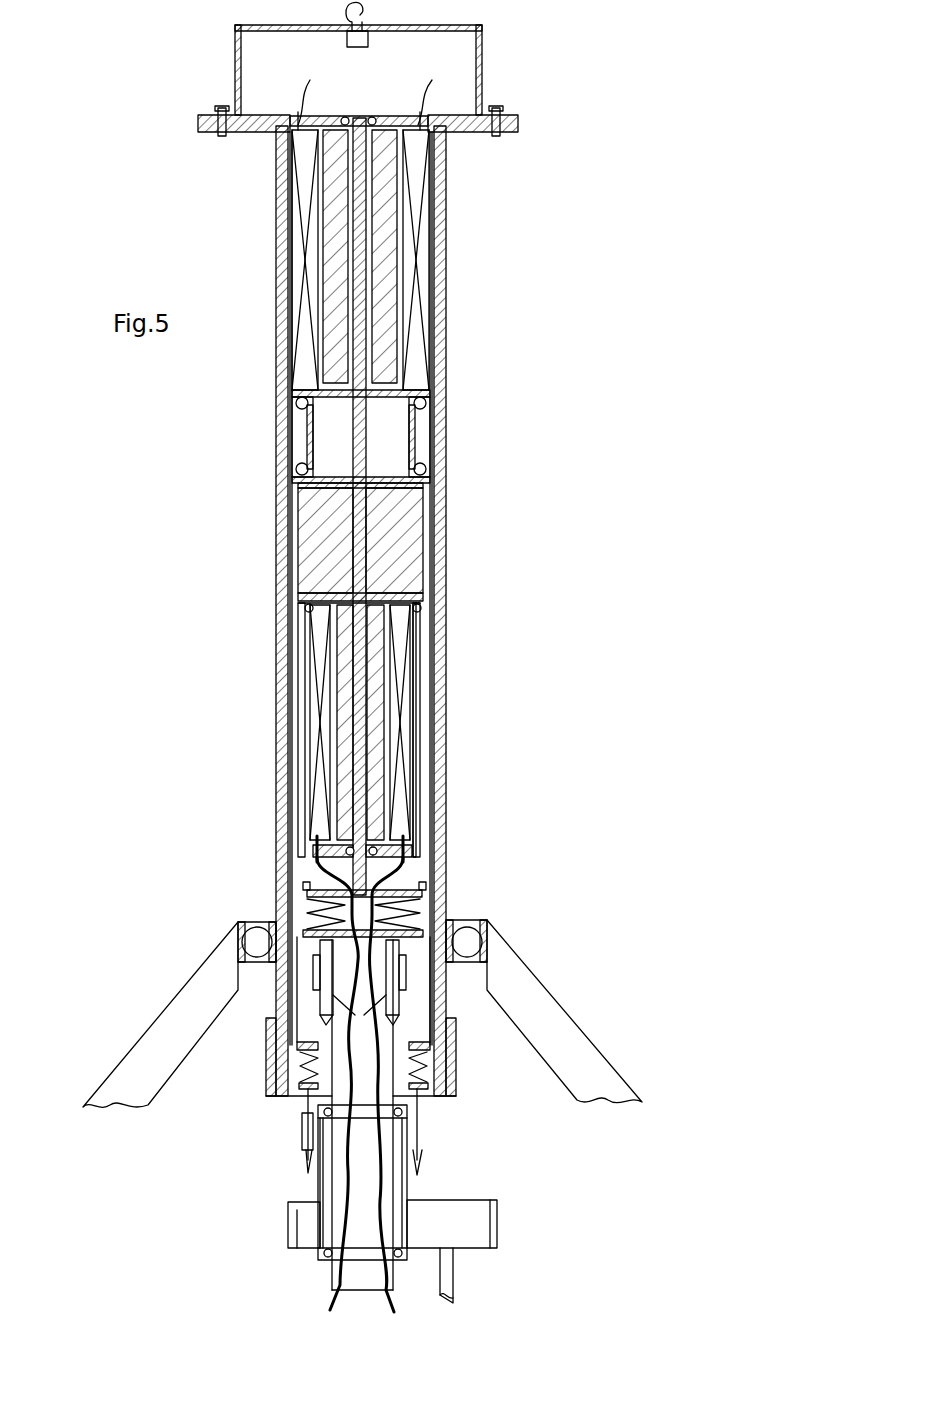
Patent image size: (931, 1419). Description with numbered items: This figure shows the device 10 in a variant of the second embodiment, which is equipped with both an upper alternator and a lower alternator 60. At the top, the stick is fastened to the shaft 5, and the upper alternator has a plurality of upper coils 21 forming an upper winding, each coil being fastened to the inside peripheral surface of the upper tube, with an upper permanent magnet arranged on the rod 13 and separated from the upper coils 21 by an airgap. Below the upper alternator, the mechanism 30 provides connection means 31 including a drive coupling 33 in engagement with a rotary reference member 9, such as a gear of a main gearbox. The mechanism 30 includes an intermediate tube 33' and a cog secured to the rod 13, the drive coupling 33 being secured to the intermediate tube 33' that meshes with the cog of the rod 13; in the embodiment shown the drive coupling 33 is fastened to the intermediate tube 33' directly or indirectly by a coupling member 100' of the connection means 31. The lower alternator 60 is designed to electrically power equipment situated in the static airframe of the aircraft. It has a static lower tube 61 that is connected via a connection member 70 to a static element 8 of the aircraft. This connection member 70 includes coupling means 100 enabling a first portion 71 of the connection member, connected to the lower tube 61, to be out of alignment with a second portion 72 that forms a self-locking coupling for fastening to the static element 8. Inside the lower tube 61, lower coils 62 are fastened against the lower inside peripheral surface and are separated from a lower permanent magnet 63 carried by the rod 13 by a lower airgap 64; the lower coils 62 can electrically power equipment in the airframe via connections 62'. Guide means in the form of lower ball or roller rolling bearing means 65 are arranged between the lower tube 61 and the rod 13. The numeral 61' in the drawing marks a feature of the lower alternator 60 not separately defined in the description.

The device 10 is at (575, 135).
The rod 13 is at (357, 112).
The upper coils 21 is at (297, 250).
The shaft 5 is at (442, 320).
The mechanism 30 is at (238, 548).
The lower alternator 60 is at (400, 639).
The lower tube 61 is at (464, 730).
The left stator coil 61' is at (276, 722).
The lower coils 62 is at (453, 722).
The lower permanent magnet 63 is at (345, 727).
The lower airgap 64 is at (385, 785).
The lower rolling bearing means 65 is at (385, 877).
The first portion of the connection member 71 is at (282, 892).
The coupling means 100 is at (312, 911).
The connection member 70 is at (418, 915).
The intermediate tube 33' is at (433, 989).
The second portion of the connection member 72 is at (422, 1008).
The static element 8 is at (395, 1031).
The coupling member 100' is at (424, 1083).
The connection means 31 is at (248, 1137).
The rotary reference member 9 is at (320, 1183).
The drive coupling 33 is at (404, 1182).
The connections 62' is at (380, 1251).